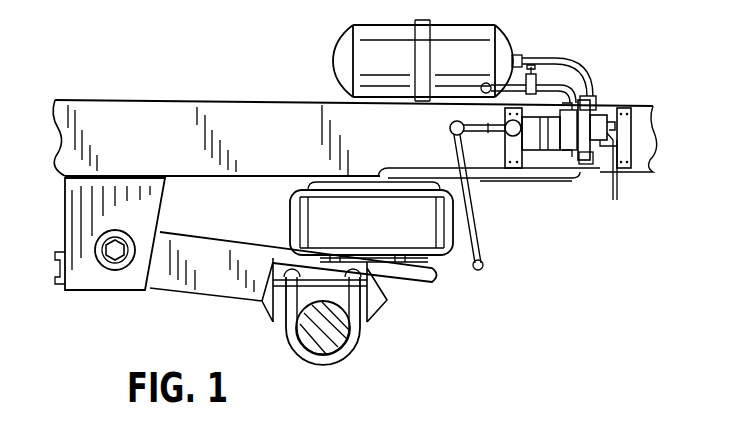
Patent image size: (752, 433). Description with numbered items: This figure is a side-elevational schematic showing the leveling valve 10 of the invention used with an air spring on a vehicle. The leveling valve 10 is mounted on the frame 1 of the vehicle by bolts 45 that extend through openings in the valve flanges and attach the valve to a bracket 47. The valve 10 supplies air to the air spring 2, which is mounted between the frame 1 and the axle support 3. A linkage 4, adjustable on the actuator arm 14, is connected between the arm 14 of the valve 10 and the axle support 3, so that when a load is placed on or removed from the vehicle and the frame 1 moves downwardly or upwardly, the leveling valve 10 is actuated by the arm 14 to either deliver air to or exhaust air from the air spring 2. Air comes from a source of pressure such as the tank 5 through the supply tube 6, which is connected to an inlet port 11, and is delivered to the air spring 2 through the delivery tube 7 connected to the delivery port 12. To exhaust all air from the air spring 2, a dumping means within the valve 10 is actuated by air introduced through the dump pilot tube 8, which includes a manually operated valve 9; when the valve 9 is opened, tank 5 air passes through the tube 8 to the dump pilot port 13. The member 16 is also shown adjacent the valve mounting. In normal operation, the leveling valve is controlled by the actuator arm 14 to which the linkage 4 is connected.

The frame 1 is at (642, 178).
The air spring 2 is at (452, 218).
The axle support 3 is at (405, 291).
The linkage 4 is at (480, 246).
The tank 5 is at (512, 48).
The supply tube 6 is at (594, 90).
The delivery tube 7 is at (470, 178).
The dump pilot tube 8 is at (563, 72).
The manually operated valve 9 is at (535, 70).
The leveling valve 10 is at (603, 170).
The inlet port 11 is at (600, 117).
The delivery port 12 is at (590, 168).
The dump pilot port 13 is at (596, 105).
The actuator arm 14 is at (525, 172).
The mounting bracket 16 is at (648, 135).
The bolts 45 is at (580, 166).
The bracket 47 is at (614, 128).